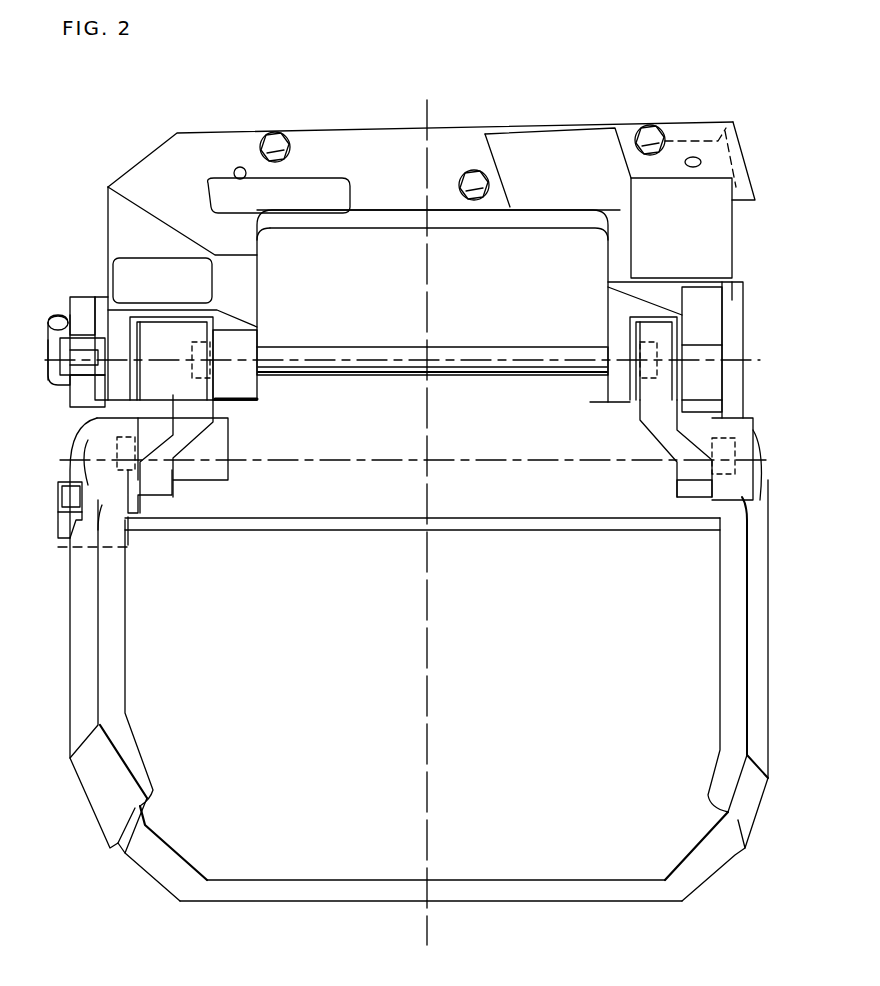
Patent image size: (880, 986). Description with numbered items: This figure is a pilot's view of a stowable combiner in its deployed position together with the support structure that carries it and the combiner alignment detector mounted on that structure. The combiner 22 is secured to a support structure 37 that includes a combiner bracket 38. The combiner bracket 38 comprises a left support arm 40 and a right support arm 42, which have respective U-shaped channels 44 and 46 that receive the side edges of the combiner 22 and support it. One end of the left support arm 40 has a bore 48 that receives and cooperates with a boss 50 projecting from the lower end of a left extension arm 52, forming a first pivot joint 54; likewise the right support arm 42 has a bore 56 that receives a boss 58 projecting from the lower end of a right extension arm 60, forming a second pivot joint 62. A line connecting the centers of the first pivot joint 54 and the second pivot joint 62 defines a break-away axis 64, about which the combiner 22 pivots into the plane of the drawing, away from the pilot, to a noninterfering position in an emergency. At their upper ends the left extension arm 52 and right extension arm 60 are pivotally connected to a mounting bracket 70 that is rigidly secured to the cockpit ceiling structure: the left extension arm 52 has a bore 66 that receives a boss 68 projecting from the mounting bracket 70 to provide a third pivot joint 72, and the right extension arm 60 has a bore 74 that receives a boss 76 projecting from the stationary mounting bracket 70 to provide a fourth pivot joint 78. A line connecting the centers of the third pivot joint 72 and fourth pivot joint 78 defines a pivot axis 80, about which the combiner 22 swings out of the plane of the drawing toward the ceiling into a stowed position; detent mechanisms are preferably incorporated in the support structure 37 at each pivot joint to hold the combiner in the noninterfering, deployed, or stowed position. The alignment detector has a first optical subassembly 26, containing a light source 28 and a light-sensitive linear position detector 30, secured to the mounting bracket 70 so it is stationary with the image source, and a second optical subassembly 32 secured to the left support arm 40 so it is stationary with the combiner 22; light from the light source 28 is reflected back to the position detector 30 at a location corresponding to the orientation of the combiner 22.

The combiner 22 is at (700, 668).
The first optical subassembly 26 is at (44, 366).
The light source 28 is at (46, 322).
The light-sensitive linear position detector 30 is at (73, 390).
The second optical subassembly 32 is at (54, 542).
The support structure 37 is at (758, 152).
The combiner bracket 38 is at (153, 720).
The left support arm 40 is at (68, 713).
The right support arm 42 is at (756, 715).
The U-shaped channel 44 is at (152, 808).
The U-shaped channel 46 is at (720, 812).
The bore 48 is at (165, 490).
The boss 50 is at (67, 464).
The left extension arm 52 is at (205, 422).
The first pivot joint 54 is at (229, 452).
The bore 56 is at (705, 522).
The boss 58 is at (679, 478).
The right extension arm 60 is at (705, 438).
The second pivot joint 62 is at (638, 428).
The break-away axis 64 is at (458, 458).
The bore 66 is at (190, 352).
The boss 68 is at (246, 373).
The mounting bracket 70 is at (158, 143).
The third pivot joint 72 is at (226, 345).
The bore 74 is at (724, 383).
The boss 76 is at (636, 372).
The fourth pivot joint 78 is at (628, 356).
The pivot axis 80 is at (493, 355).